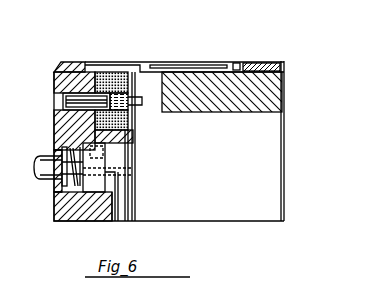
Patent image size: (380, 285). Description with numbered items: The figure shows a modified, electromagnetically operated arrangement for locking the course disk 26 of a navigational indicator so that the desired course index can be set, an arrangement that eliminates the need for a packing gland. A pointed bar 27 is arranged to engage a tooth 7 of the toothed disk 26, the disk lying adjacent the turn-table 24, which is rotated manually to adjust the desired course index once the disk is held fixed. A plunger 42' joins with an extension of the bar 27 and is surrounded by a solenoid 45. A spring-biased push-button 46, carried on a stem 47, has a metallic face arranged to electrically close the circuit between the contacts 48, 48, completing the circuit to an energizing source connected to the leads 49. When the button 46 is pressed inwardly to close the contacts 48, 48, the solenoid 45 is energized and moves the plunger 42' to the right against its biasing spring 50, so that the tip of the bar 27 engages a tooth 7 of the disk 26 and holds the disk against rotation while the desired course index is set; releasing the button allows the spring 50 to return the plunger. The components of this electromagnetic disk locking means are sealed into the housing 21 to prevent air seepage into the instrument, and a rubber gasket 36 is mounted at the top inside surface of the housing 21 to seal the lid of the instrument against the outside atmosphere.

The housing 21 is at (80, 210).
The rubber gasket 36 is at (70, 64).
The solenoid 45 is at (118, 72).
The plunger 42' is at (57, 111).
The biasing spring 50 is at (140, 104).
The turn-table 24 is at (222, 108).
The pointed bar 27 is at (197, 64).
The pin 7 is at (237, 63).
The course disk 26 is at (270, 66).
The push-button 46 is at (42, 157).
The shaft 47 is at (46, 181).
The contacts 48 is at (75, 170).
The leads 49 is at (118, 206).